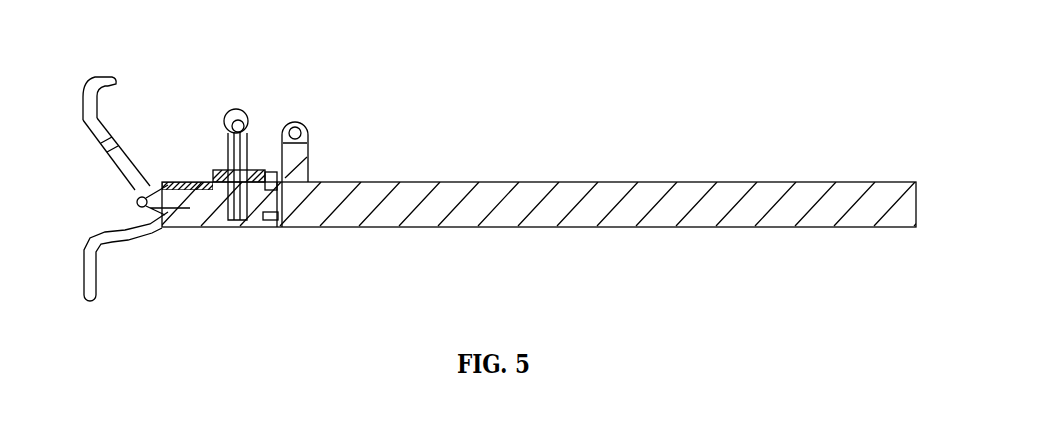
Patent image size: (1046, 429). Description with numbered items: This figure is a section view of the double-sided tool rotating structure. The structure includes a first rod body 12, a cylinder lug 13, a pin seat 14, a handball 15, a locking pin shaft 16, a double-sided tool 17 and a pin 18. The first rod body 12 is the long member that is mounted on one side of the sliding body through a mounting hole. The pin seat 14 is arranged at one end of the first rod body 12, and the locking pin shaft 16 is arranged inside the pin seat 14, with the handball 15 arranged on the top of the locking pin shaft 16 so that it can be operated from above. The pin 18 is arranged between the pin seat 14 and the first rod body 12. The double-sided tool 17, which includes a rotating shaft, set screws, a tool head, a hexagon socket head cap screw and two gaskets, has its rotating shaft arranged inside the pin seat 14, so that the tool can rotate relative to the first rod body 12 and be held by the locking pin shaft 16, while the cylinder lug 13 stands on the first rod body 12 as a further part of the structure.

The first rod body 12 is at (453, 182).
The cylinder lug 13 is at (302, 123).
The pin seat 14 is at (244, 168).
The handball 15 is at (235, 108).
The locking pin shaft 16 is at (224, 130).
The double-sided tool 17 is at (130, 155).
The pin 18 is at (270, 205).